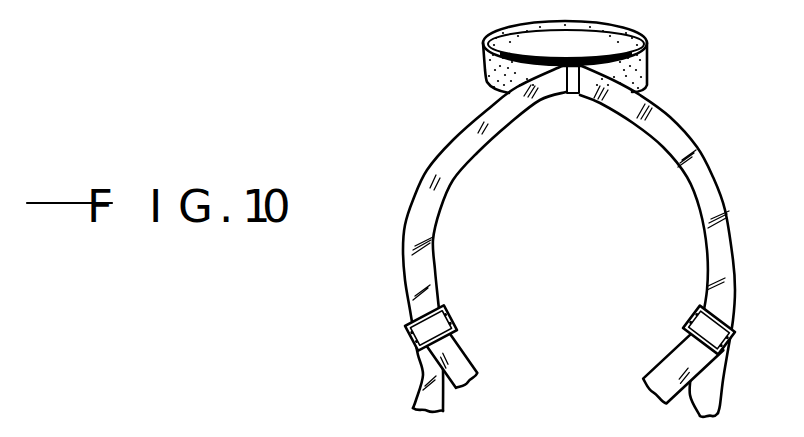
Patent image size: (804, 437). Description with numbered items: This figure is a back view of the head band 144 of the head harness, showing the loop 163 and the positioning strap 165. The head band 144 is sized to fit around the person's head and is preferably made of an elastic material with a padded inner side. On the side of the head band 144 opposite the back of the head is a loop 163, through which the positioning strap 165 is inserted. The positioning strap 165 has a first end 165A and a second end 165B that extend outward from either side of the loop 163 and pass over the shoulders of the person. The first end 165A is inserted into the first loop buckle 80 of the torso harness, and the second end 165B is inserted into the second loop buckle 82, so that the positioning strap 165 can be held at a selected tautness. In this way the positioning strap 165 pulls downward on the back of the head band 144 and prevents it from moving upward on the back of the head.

The head band 144 is at (648, 43).
The loop 163 is at (577, 94).
The positioning strap 165 is at (544, 241).
The first end of positioning strap 165A is at (711, 242).
The second end of positioning strap 165B is at (435, 167).
The first loop buckle 80 is at (688, 325).
The second loop buckle 82 is at (407, 333).